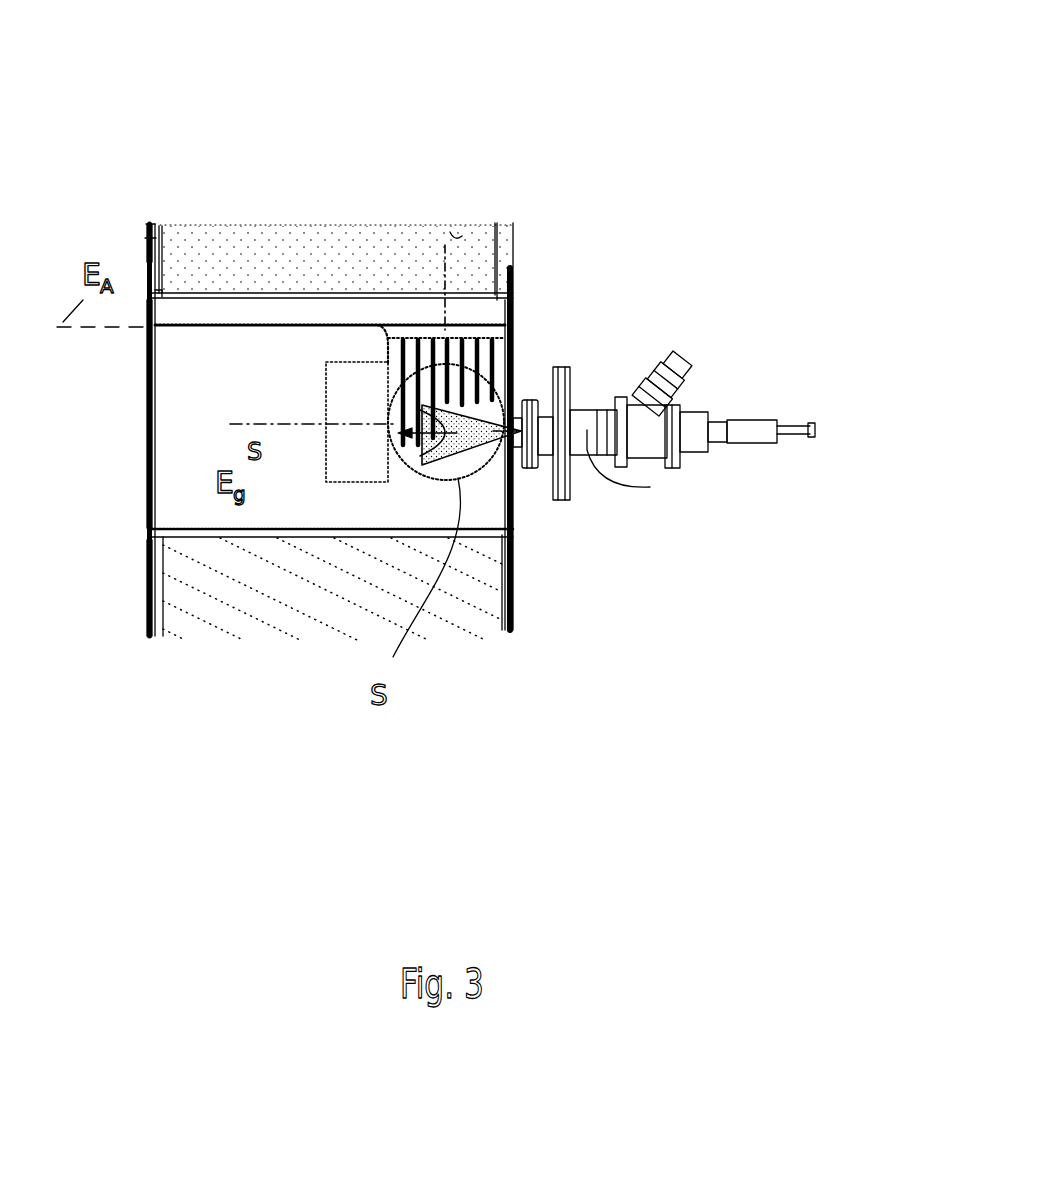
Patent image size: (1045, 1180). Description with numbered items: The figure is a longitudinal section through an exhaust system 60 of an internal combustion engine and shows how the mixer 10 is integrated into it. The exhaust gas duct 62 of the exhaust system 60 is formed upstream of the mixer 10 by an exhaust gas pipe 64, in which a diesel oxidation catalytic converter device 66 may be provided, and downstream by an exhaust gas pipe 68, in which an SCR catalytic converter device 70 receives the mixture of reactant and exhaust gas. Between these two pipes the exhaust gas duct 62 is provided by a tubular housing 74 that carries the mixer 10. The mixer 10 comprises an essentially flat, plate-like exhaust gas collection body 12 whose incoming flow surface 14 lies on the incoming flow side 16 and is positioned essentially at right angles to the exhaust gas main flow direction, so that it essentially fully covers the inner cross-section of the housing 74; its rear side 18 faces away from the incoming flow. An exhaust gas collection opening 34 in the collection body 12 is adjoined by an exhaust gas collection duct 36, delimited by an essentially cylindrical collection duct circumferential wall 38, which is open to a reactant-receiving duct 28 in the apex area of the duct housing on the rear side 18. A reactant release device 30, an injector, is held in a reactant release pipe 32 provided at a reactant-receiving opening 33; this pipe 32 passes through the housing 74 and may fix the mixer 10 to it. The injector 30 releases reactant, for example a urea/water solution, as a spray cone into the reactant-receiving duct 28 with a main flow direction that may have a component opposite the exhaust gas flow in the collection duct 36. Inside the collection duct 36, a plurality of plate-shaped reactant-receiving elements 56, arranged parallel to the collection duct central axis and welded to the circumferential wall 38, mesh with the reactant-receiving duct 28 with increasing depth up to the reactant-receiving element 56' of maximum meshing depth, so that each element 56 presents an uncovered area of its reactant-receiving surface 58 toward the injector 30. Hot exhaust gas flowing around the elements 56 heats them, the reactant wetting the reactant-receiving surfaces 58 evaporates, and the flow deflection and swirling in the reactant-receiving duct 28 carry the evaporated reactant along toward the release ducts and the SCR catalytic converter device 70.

The mixer 10 is at (478, 505).
The exhaust gas collection body 12 is at (194, 330).
The incoming flow surface 14 is at (335, 323).
The incoming flow side 16 is at (233, 320).
The rear side 18 is at (272, 337).
The reactant-receiving duct 28 is at (504, 462).
The reactant release device 30 is at (690, 410).
The reactant release pipe 32 is at (526, 470).
The reactant-receiving opening 33 is at (560, 388).
The exhaust gas collection opening 34 is at (466, 311).
The exhaust gas collection duct 36 is at (487, 350).
The collection duct circumferential wall 38 is at (490, 400).
The reactant-receiving elements 56 is at (510, 375).
The reactant-receiving element having maximum depth of meshing 56' is at (374, 574).
The reactant-receiving surfaces 58 is at (422, 463).
The exhaust system 60 is at (687, 98).
The exhaust gas duct 62 is at (207, 225).
The exhaust gas pipe 64 is at (145, 237).
The diesel oxidation catalytic converter device 66 is at (307, 263).
The exhaust gas pipe 68 is at (155, 607).
The SCR catalytic converter device 70 is at (213, 608).
The tubular housing 74 is at (145, 417).